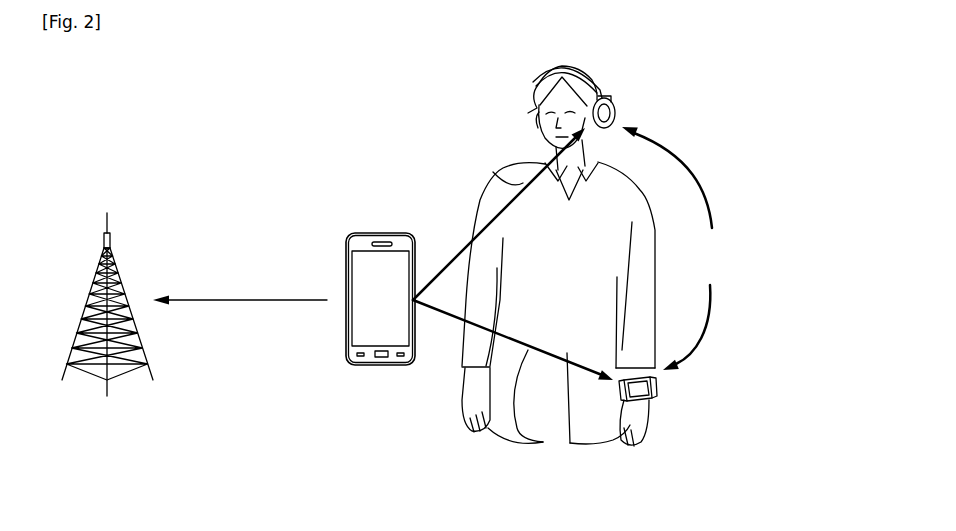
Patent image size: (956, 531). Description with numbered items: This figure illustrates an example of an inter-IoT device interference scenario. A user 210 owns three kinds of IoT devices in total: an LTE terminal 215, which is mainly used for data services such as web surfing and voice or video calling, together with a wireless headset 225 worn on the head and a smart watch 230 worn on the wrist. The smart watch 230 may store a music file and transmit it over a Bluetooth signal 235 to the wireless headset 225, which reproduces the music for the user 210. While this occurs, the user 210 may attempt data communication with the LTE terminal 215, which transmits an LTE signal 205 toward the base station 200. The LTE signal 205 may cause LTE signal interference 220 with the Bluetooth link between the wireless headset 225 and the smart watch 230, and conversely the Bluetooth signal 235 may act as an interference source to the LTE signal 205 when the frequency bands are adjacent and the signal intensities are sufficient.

The base station 200 is at (108, 213).
The LTE signal 205 is at (245, 308).
The user 210 is at (592, 442).
The LTE terminal 215 is at (379, 232).
The LTE signal interference 220 is at (503, 170).
The wireless headset 225 is at (613, 113).
The smart watch 230 is at (655, 388).
The Bluetooth signal 235 is at (704, 198).